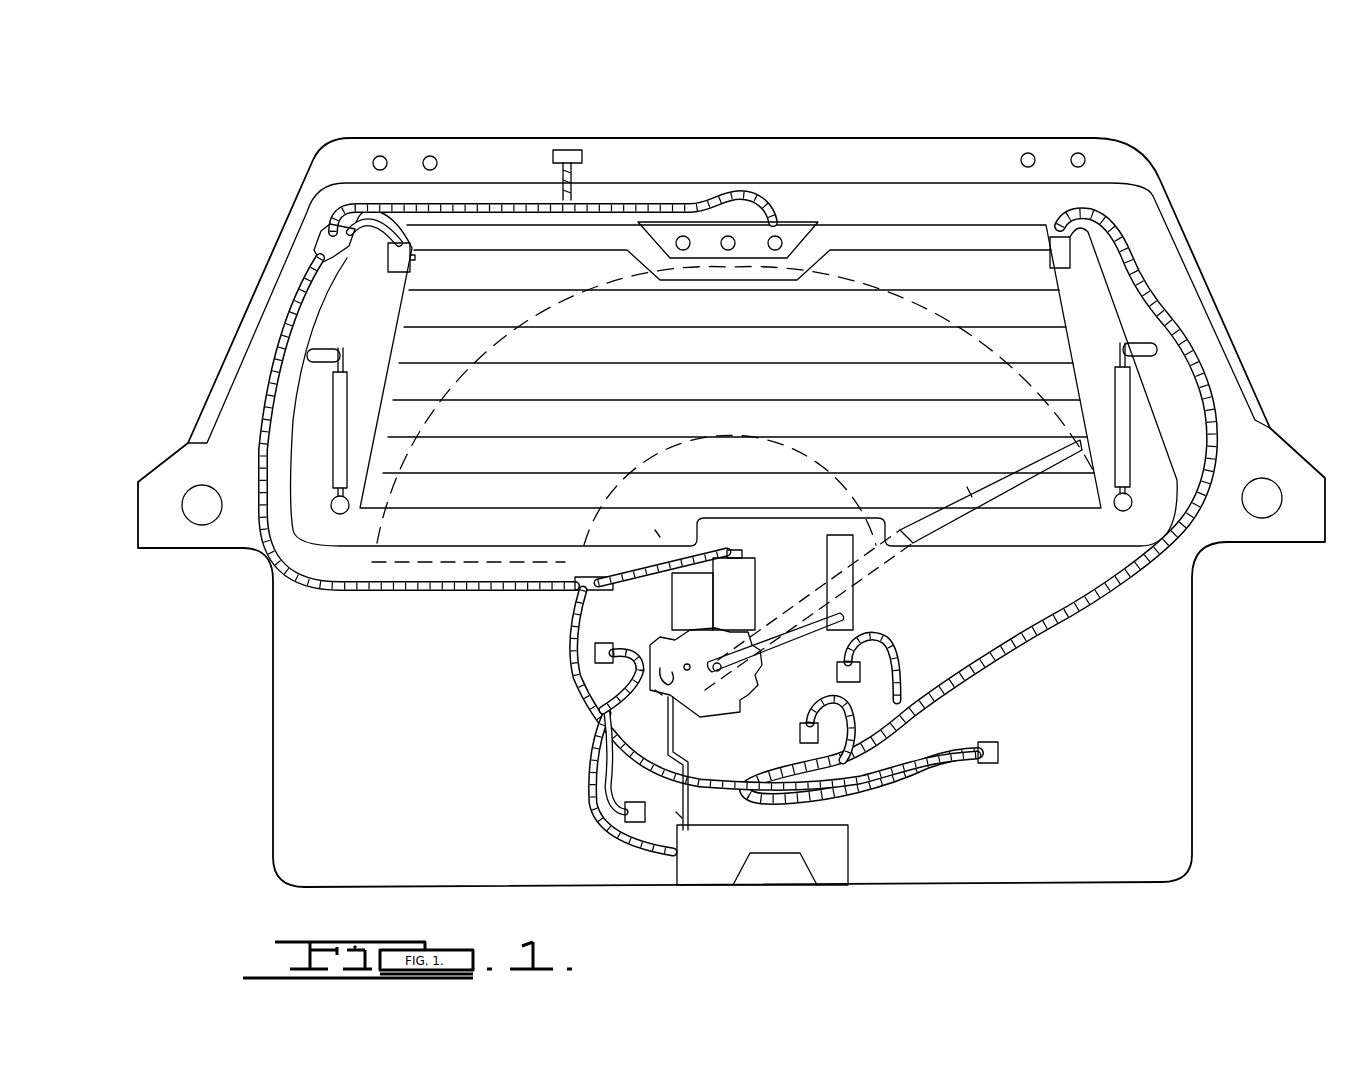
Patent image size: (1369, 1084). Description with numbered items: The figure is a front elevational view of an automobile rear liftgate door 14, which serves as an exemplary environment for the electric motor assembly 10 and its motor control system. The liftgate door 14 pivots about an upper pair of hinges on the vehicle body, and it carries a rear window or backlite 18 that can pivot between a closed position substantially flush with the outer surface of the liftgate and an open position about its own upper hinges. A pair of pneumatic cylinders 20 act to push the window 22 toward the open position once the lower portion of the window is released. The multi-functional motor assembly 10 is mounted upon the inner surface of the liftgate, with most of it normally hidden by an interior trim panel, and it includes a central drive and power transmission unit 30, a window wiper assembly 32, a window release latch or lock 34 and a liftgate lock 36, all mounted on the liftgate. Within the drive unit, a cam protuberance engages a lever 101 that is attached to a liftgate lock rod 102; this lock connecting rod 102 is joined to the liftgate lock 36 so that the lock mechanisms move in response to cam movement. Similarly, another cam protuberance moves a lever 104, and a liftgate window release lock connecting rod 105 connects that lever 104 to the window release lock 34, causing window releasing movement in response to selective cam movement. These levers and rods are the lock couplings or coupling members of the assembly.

The electric motor assembly 10 is at (662, 540).
The automobile rear liftgate door 14 is at (1112, 135).
The rear window or backlite 18 is at (392, 323).
The pneumatic cylinders 20 is at (1123, 428).
The window 22 is at (872, 235).
The central drive and power transmission unit 30 is at (642, 607).
The window wiper assembly 32 is at (945, 520).
The window release latch or lock 34 is at (857, 577).
The liftgate lock 36 is at (706, 865).
The lever 101 is at (655, 690).
The liftgate lock rod 102 is at (680, 810).
The lever 104 is at (715, 722).
The liftgate window release lock connecting rod 105 is at (800, 650).